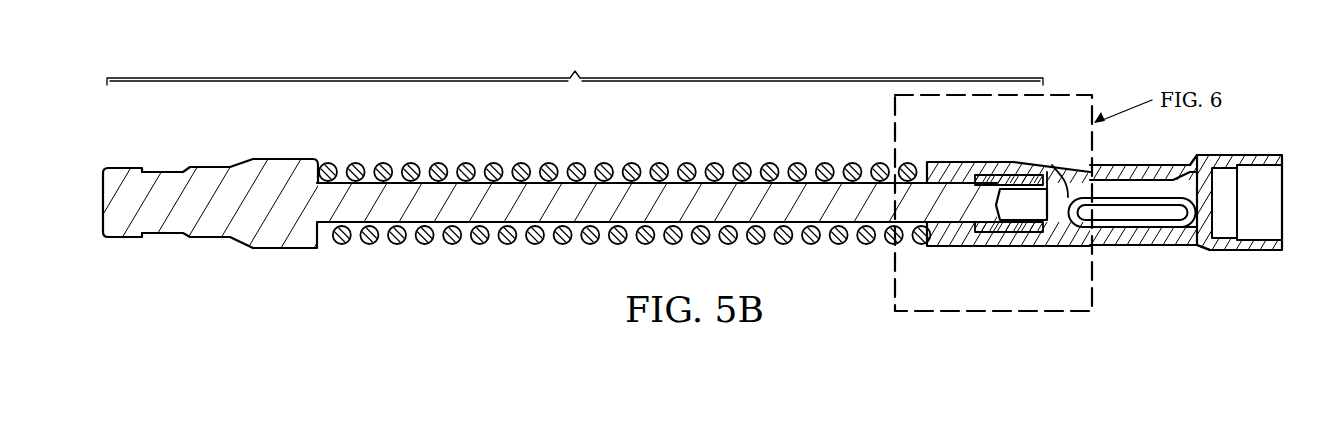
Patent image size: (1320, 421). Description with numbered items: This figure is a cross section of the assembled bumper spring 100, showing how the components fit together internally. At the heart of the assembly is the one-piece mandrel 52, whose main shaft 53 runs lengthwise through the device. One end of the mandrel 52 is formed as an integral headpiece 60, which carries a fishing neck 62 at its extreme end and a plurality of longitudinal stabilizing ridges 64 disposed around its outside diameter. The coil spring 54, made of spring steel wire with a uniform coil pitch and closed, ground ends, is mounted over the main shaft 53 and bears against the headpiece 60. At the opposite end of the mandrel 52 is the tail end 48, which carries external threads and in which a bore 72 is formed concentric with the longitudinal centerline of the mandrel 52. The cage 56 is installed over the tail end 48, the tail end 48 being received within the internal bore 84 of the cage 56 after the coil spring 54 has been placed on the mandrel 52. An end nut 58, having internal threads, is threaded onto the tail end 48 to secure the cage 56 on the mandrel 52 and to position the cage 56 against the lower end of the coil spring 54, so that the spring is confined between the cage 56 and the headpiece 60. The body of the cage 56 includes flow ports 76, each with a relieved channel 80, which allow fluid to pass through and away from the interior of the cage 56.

The assembled bumper spring 100 is at (440, 51).
The mandrel 52 is at (575, 63).
The fishing neck 62 is at (118, 168).
The headpiece 60 is at (207, 167).
The longitudinal stabilizing ridges 64 is at (290, 159).
The cage 56 is at (955, 247).
The coil spring 54 is at (798, 162).
The main shaft 53 is at (944, 164).
The end nut 58 is at (996, 174).
The tail end 48 is at (1048, 238).
The bore 72 is at (1060, 162).
The relieved channel 80 is at (1130, 170).
The flow ports 76 is at (1150, 220).
The internal bore 84 is at (1290, 229).